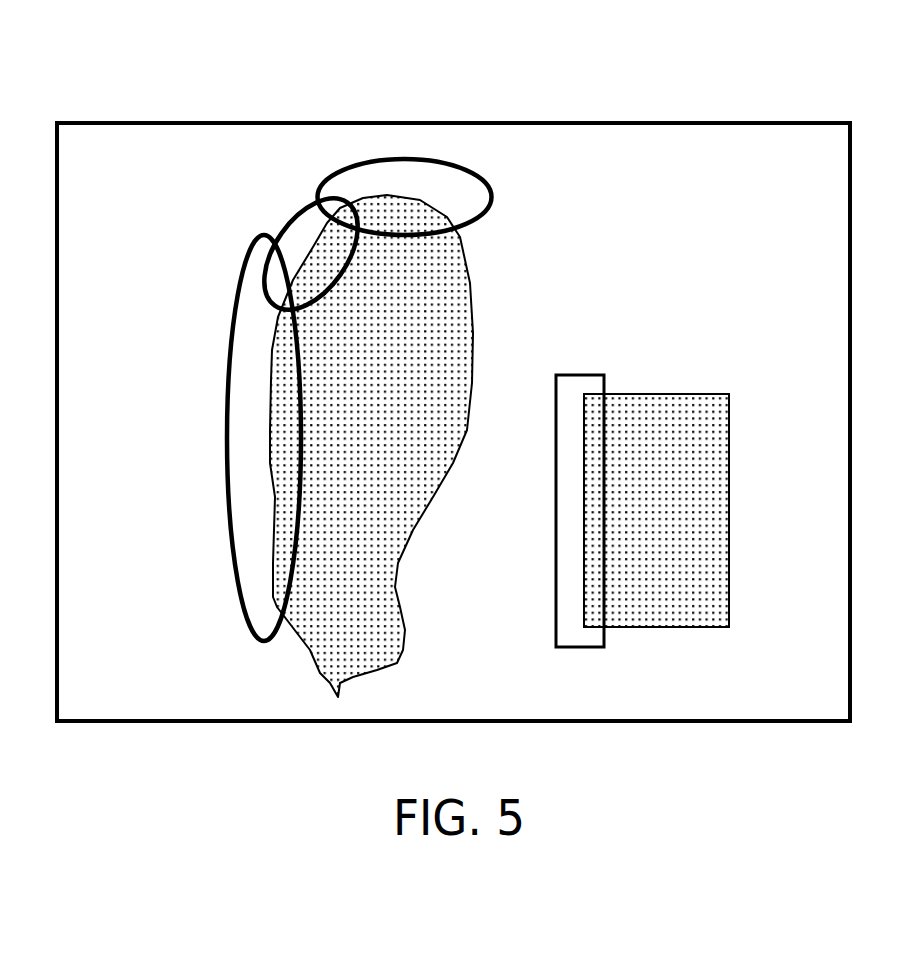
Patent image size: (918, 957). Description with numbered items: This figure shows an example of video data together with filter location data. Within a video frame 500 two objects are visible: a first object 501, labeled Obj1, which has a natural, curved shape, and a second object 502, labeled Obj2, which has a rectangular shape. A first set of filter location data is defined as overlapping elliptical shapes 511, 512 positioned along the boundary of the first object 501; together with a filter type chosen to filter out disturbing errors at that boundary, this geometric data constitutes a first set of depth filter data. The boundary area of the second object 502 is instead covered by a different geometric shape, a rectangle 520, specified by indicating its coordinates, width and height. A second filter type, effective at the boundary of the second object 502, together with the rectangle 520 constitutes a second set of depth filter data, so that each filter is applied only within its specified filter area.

The video frame 500 is at (502, 121).
The first object 501 is at (230, 358).
The second object 502 is at (728, 520).
The elliptical shape 511 is at (283, 222).
The elliptical shape 512 is at (493, 202).
The rectangle 520 is at (578, 374).